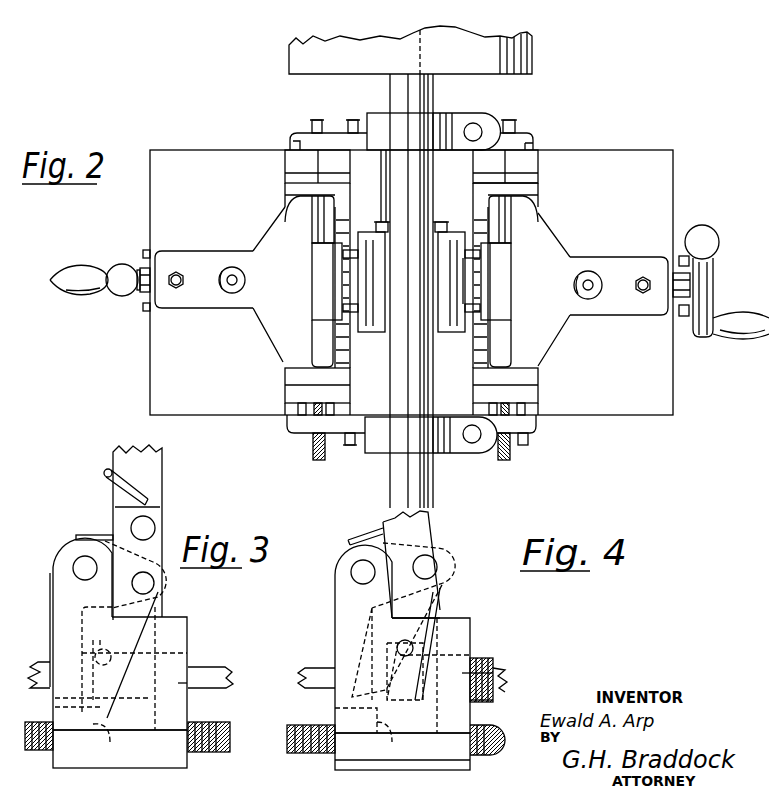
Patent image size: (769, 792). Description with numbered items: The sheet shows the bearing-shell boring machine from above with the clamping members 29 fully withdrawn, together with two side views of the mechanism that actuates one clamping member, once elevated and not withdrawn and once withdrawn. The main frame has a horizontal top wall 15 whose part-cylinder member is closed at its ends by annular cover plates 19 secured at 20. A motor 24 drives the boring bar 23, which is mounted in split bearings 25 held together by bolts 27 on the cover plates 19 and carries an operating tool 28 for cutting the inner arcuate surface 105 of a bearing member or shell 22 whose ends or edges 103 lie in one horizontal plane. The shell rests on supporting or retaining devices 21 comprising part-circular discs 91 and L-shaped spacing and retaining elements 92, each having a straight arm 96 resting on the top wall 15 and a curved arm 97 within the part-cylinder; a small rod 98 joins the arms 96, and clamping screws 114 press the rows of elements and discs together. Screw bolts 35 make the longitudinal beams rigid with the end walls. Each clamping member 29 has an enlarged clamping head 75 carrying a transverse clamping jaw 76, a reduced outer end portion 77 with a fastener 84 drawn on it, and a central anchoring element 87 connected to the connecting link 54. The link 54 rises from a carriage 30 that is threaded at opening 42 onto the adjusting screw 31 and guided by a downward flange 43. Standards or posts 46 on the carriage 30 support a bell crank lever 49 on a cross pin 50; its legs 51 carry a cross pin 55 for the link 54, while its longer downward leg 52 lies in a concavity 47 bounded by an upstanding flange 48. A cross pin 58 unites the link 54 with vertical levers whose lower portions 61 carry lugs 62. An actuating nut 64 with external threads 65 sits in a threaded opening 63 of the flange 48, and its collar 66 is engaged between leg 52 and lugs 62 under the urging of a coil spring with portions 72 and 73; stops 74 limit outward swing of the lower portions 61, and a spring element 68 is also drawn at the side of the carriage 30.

In FIG. 2, the top wall 15 is at (207, 158).
In FIG. 2, the annular cover plate 19 is at (522, 138).
In FIG. 2, the securing means for cover plates 20 is at (352, 118).
In FIG. 2, the supporting or retaining devices 21 is at (536, 185).
In FIG. 2, the bearing member or shell 22 is at (456, 220).
In FIG. 2, the boring bar 23 is at (429, 379).
In FIG. 2, the motor 24 is at (533, 48).
In FIG. 2, the bearing 25 is at (445, 118).
In FIG. 2, the bolt 27 is at (479, 124).
In FIG. 2, the operating tool 28 is at (385, 220).
In FIG. 2, the clamping member 29 is at (268, 246).
In FIG. 2, the screw bolt 35 is at (143, 252).
In FIG. 2, the clamping head 75 is at (285, 222).
In FIG. 2, the clamping jaw 76 is at (330, 282).
In FIG. 2, the outer end portion of clamping member 77 is at (228, 257).
In FIG. 2, the screw 84 is at (175, 288).
In FIG. 2, the anchoring element 87 is at (230, 293).
In FIG. 2, the part-circular disc 91 is at (358, 232).
In FIG. 2, the spacing and retaining element 92 is at (285, 378).
In FIG. 2, the straight arm 96 is at (538, 197).
In FIG. 2, the curved arm 97 is at (480, 182).
In FIG. 2, the small rod 98 is at (530, 422).
In FIG. 2, the ends or edges of bearing shell 103 is at (464, 296).
In FIG. 2, the inner arcuate surface 105 is at (384, 332).
In FIG. 2, the clamping screw 114 is at (312, 418).
In FIG. 3, the carriage 30 is at (196, 620).
In FIG. 4, the carriage 30 is at (470, 638).
In FIG. 3, the adjusting screw 31 is at (200, 752).
In FIG. 4, the adjusting screw 31 is at (478, 756).
In FIG. 3, the threaded opening 42 is at (190, 728).
In FIG. 4, the threaded opening 42 is at (335, 725).
In FIG. 4, the flange 43 is at (335, 761).
In FIG. 3, the standard or post 46 is at (58, 581).
In FIG. 4, the standard or post 46 is at (340, 592).
In FIG. 3, the concavity 47 is at (157, 664).
In FIG. 4, the concavity 47 is at (450, 652).
In FIG. 3, the upstanding flange 48 is at (178, 684).
In FIG. 4, the upstanding flange 48 is at (500, 674).
In FIG. 3, the bell crank lever 49 is at (48, 630).
In FIG. 3, the cross pin 50 is at (77, 562).
In FIG. 4, the cross pin 50 is at (358, 567).
In FIG. 3, the leg of bell crank lever 51 is at (163, 592).
In FIG. 4, the leg of bell crank lever 51 is at (447, 562).
In FIG. 3, the downwardly extending leg 52 is at (50, 645).
In FIG. 4, the downwardly extending leg 52 is at (350, 622).
In FIG. 3, the connecting link 54 is at (163, 476).
In FIG. 4, the connecting link 54 is at (418, 534).
In FIG. 3, the cross pin 55 is at (150, 595).
In FIG. 4, the cross pin 55 is at (437, 568).
In FIG. 3, the cross pin 58 is at (150, 522).
In FIG. 4, the lower portion of vertical lever 61 is at (430, 604).
In FIG. 3, the lug 62 is at (108, 645).
In FIG. 4, the lug 62 is at (412, 646).
In FIG. 3, the threaded opening 63 is at (182, 650).
In FIG. 4, the threaded opening 63 is at (493, 665).
In FIG. 4, the actuating nut 64 is at (484, 702).
In FIG. 4, the externally threaded surface 65 is at (508, 684).
In FIG. 4, the collar 66 is at (398, 700).
In FIG. 3, the spring 68 is at (233, 682).
In FIG. 4, the spring 68 is at (322, 668).
In FIG. 3, the spring portion 72 is at (104, 472).
In FIG. 3, the spring portion 73 is at (93, 535).
In FIG. 4, the spring portion 73 is at (360, 540).
In FIG. 3, the stop 74 is at (113, 746).
In FIG. 4, the stop 74 is at (395, 746).